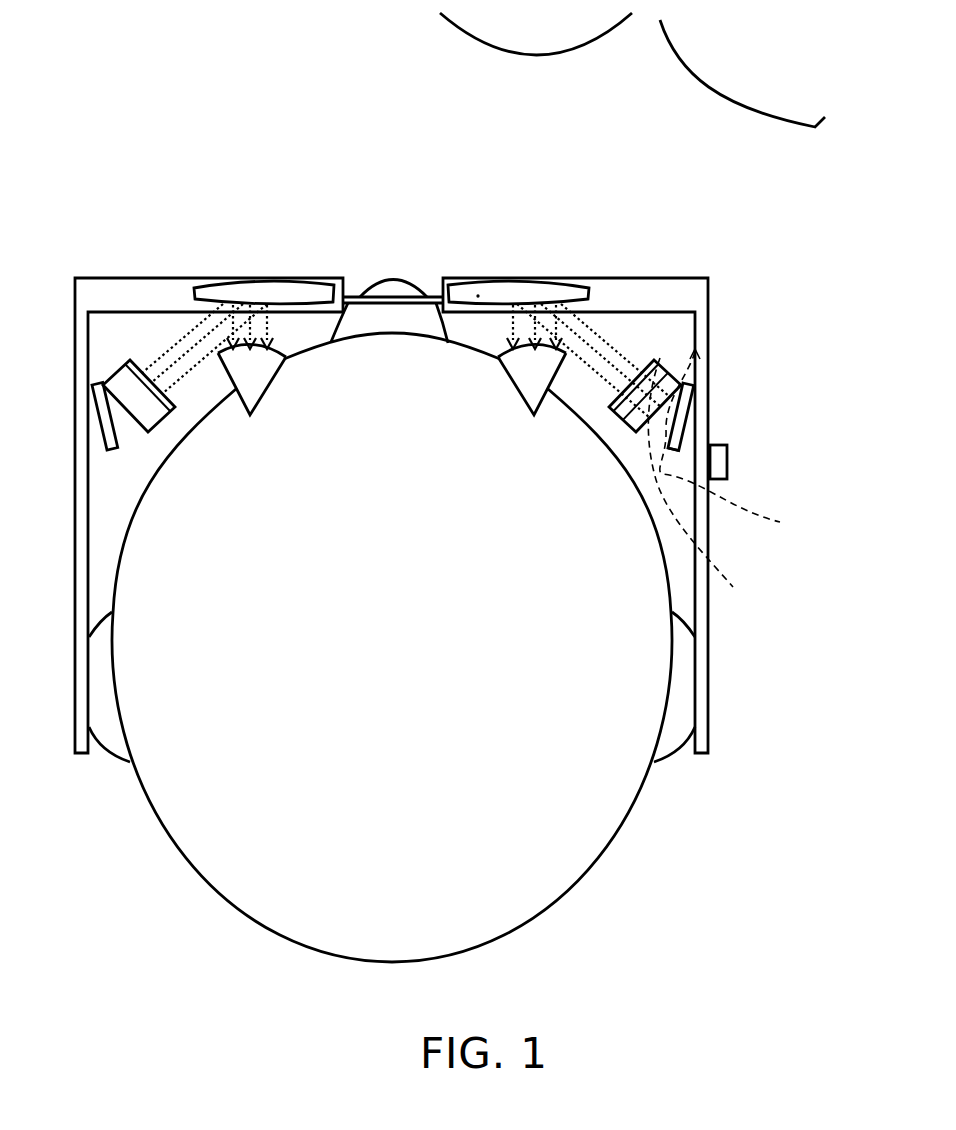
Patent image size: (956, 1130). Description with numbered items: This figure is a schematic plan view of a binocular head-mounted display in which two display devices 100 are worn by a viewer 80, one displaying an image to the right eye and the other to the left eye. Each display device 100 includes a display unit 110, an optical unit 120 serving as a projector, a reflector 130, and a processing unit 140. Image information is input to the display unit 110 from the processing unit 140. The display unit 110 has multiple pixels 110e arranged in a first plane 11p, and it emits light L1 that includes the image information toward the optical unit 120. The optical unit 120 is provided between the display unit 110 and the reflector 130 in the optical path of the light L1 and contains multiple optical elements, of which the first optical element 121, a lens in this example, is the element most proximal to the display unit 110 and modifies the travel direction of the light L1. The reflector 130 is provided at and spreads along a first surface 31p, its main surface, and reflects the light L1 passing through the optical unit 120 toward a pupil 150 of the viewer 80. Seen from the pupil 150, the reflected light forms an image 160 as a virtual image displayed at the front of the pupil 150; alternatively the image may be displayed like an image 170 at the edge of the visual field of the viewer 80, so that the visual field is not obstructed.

The viewer 80 is at (232, 822).
The display device 100 is at (128, 338).
The display unit 110 is at (688, 421).
The pixels 110e is at (672, 423).
The optical unit 120 is at (688, 357).
The first optical element 121 is at (657, 358).
The reflector 130 is at (585, 296).
The processing unit 140 is at (727, 463).
The pupil 150 is at (503, 375).
The image 160 is at (460, 40).
The image 170 is at (707, 88).
The first surface 31p is at (477, 295).
The first plane 11p is at (746, 444).
The light L1 is at (711, 486).